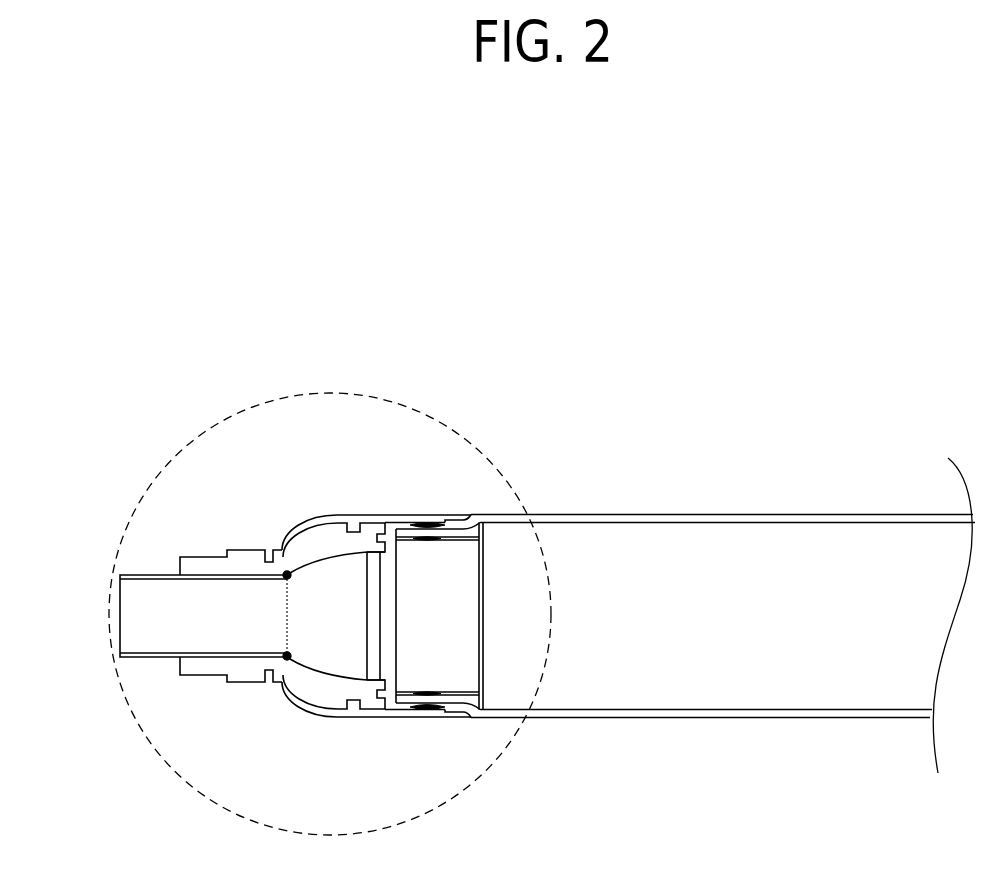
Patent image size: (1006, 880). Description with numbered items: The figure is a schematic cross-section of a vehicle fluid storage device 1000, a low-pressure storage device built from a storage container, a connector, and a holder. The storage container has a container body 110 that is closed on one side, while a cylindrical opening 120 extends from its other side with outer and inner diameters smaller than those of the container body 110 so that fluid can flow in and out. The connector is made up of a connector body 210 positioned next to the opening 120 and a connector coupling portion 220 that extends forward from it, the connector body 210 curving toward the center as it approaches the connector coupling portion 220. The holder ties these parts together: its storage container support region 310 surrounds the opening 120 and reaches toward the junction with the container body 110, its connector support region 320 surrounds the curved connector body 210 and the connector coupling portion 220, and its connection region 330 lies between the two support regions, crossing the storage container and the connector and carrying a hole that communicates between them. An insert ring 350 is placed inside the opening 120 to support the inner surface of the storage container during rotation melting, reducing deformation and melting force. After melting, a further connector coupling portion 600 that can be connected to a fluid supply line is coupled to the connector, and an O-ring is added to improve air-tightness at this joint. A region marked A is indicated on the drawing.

The vehicle fluid storage device 1000 is at (628, 244).
The container body 110 is at (757, 515).
The opening 120 is at (427, 710).
The connector body 210 is at (320, 690).
The connector coupling portion 220 is at (188, 665).
The storage container support region 310 is at (340, 515).
The connector support region 320 is at (252, 547).
The connection region 330 is at (388, 613).
The insert ring 350 is at (459, 676).
The connector coupling portion 600 is at (153, 573).
The element O-ring is at (287, 658).
The detail region A is at (220, 422).